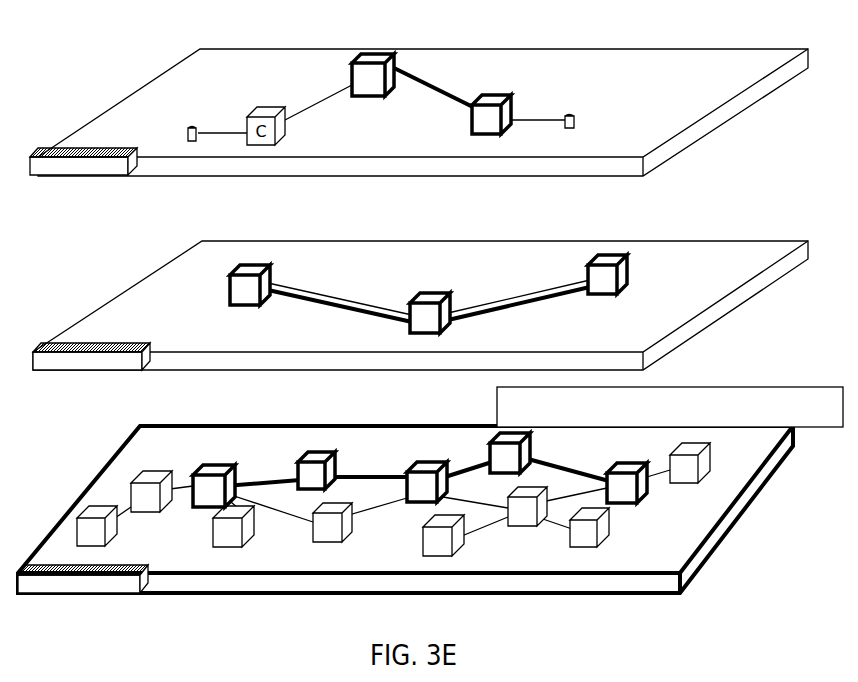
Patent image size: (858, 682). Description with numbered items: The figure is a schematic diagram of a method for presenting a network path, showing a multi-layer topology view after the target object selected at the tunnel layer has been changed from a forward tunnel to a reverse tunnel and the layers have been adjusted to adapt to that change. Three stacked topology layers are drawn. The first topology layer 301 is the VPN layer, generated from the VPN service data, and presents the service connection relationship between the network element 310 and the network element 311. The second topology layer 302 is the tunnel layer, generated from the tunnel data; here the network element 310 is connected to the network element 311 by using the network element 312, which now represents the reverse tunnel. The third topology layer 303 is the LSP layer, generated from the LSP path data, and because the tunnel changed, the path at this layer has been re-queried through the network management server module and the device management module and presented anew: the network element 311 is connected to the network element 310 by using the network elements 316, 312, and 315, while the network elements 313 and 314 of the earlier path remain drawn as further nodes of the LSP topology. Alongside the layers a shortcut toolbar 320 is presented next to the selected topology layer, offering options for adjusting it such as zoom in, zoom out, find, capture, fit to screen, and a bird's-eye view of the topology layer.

The first topology layer 301 is at (90, 150).
The second topology layer 302 is at (92, 340).
The third topology layer 303 is at (63, 567).
The network element 310 is at (378, 57).
The network element 311 is at (495, 100).
The network element 312 is at (414, 300).
The network element 313 is at (345, 535).
The network element 314 is at (527, 525).
The network element 315 is at (307, 453).
The network element 316 is at (507, 440).
The shortcut toolbar 320 is at (730, 387).